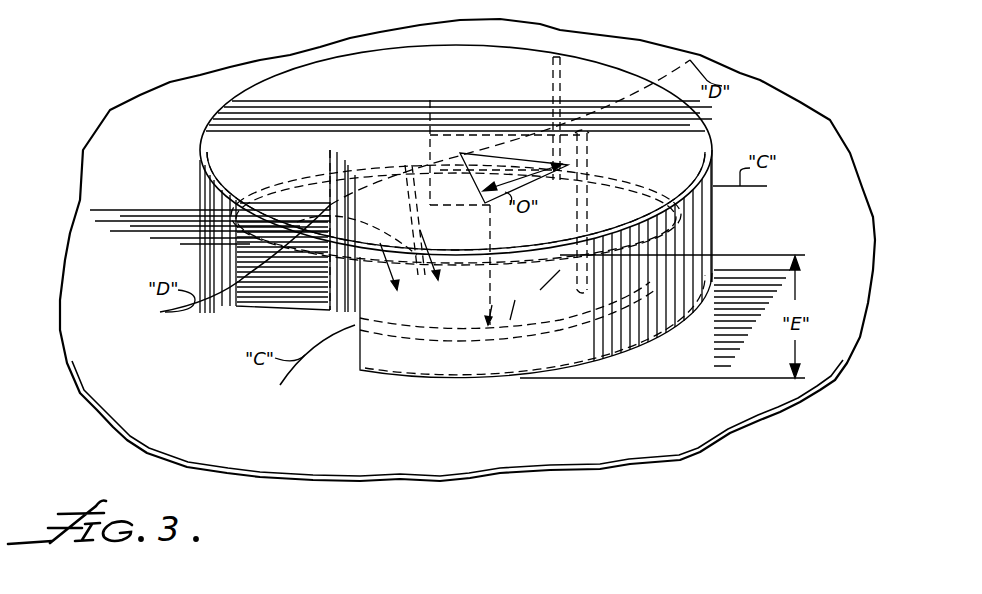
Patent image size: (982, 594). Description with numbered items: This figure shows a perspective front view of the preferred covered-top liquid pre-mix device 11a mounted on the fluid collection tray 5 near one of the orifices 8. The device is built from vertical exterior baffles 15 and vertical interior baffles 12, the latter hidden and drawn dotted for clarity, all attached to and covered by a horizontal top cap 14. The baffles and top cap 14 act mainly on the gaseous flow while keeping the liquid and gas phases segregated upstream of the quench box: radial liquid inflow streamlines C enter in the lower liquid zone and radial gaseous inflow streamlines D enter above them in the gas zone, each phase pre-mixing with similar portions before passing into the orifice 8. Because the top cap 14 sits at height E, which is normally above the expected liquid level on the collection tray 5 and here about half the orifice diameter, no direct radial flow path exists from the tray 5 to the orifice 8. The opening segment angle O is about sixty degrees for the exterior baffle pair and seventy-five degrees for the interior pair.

The fluid collection tray 5 is at (170, 88).
The covered-top liquid pre-mix device 11a is at (177, 131).
The vertical exterior baffles 15 is at (200, 182).
The vertical interior baffles 12 is at (330, 156).
The horizontal top cap 14 is at (600, 75).
The orifices 8 is at (540, 315).